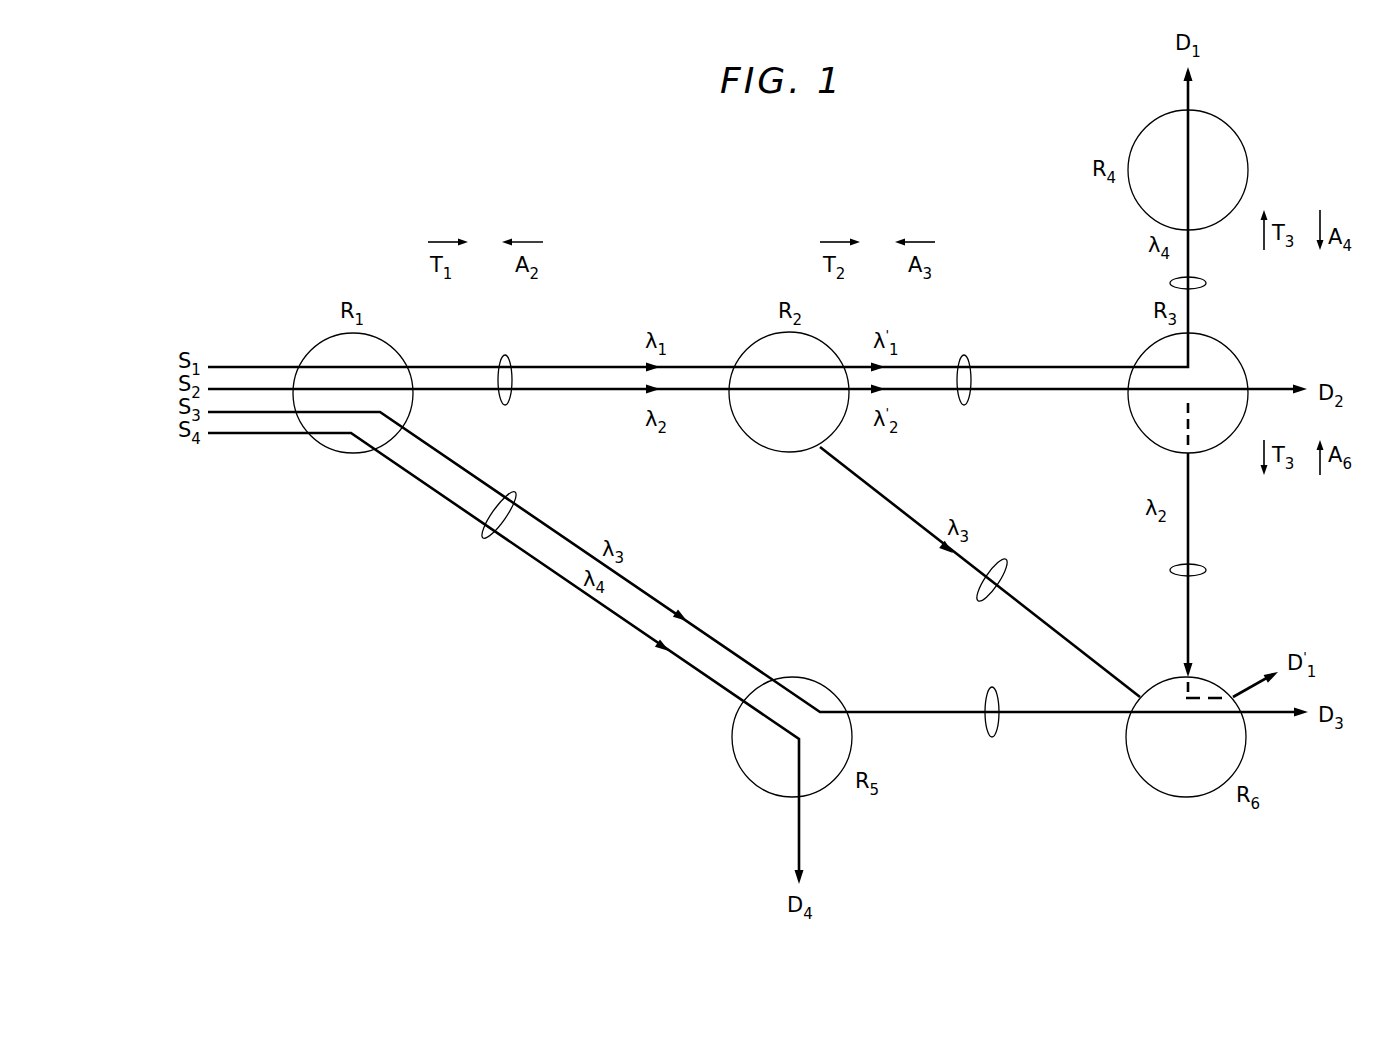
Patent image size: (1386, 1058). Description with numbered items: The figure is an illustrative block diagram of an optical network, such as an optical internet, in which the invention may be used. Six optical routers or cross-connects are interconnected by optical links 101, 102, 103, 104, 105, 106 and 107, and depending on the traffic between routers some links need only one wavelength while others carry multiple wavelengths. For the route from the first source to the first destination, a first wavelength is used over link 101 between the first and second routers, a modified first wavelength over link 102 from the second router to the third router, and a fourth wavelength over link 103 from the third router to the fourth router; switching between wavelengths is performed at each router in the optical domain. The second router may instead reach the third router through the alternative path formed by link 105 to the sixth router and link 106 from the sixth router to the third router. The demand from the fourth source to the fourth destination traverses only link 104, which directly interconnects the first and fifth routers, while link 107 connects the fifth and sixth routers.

The optical link 101 is at (505, 355).
The optical link 102 is at (964, 355).
The optical link 103 is at (1206, 283).
The optical link 104 is at (484, 539).
The optical link 105 is at (1005, 560).
The optical link 106 is at (1206, 570).
The optical link 107 is at (992, 737).